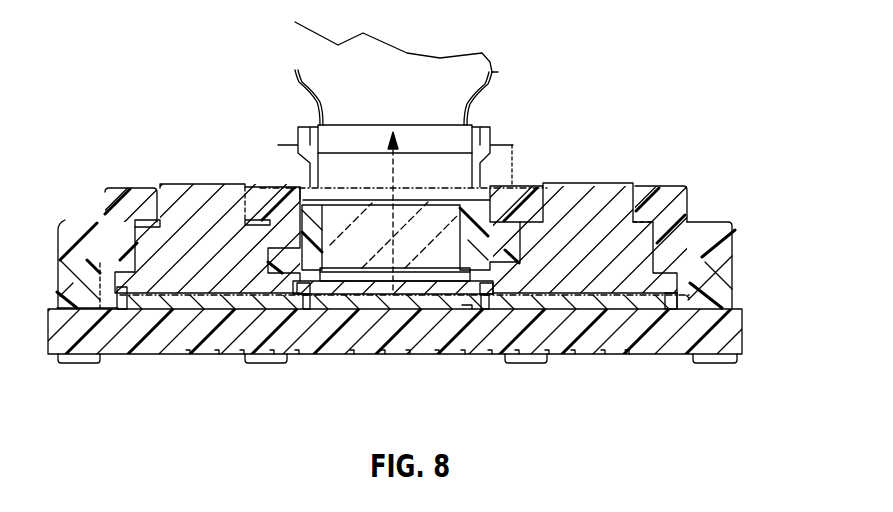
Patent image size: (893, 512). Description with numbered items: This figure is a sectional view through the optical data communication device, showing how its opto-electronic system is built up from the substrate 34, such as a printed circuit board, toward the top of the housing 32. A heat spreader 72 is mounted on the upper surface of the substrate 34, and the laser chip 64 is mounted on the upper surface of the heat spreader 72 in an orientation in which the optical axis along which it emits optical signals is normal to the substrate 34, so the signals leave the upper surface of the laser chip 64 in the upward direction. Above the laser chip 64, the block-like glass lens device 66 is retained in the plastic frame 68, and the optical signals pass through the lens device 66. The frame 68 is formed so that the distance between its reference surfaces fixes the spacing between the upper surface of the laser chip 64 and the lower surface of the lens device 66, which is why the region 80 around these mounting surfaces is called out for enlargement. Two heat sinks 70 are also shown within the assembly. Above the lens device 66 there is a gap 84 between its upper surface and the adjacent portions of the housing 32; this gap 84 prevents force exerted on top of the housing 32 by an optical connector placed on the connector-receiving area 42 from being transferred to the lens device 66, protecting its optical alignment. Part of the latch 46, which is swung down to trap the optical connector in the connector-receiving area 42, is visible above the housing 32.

The housing 32 is at (110, 194).
The substrate 34 is at (142, 354).
The connector-receiving area 42 is at (428, 192).
The latch 46 is at (498, 72).
The laser chip 64 is at (358, 282).
The lens device 66 is at (415, 268).
The frame 68 is at (288, 218).
The heat sinks 70 is at (213, 183).
The heat spreader 72 is at (608, 312).
The region 80 is at (467, 307).
The gap 84 is at (478, 192).